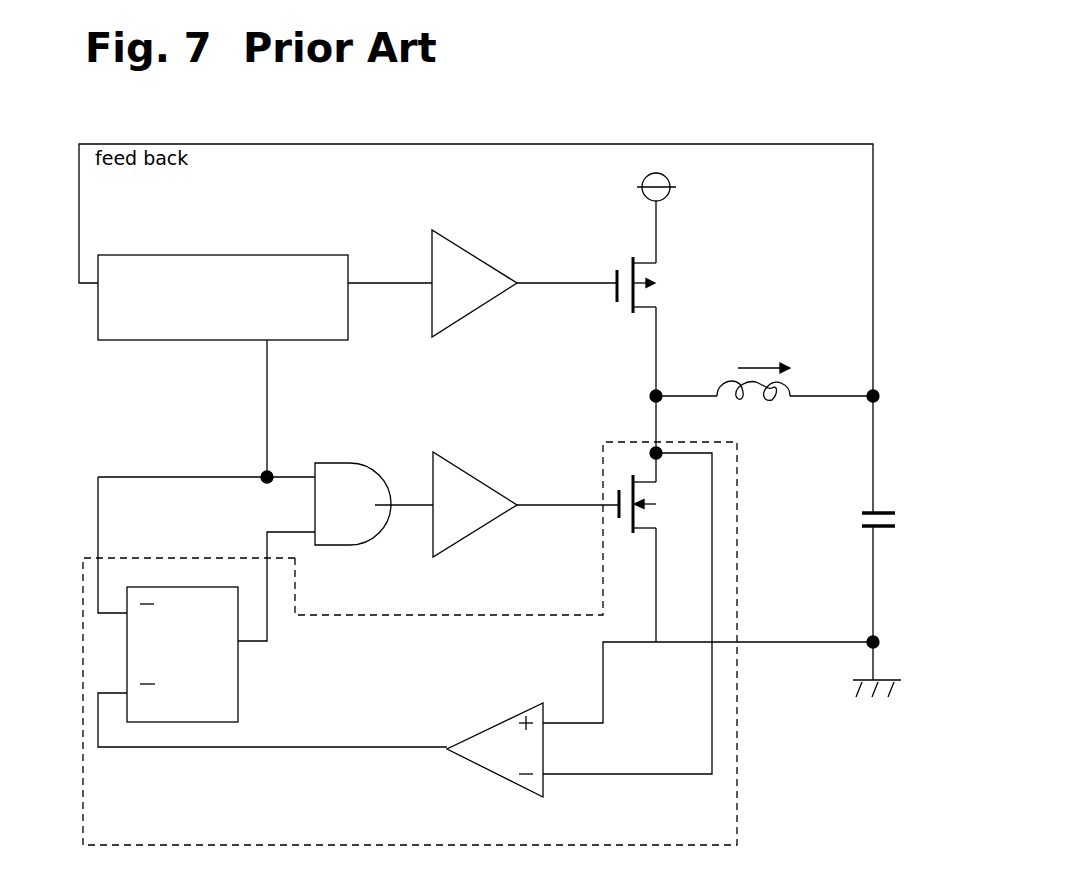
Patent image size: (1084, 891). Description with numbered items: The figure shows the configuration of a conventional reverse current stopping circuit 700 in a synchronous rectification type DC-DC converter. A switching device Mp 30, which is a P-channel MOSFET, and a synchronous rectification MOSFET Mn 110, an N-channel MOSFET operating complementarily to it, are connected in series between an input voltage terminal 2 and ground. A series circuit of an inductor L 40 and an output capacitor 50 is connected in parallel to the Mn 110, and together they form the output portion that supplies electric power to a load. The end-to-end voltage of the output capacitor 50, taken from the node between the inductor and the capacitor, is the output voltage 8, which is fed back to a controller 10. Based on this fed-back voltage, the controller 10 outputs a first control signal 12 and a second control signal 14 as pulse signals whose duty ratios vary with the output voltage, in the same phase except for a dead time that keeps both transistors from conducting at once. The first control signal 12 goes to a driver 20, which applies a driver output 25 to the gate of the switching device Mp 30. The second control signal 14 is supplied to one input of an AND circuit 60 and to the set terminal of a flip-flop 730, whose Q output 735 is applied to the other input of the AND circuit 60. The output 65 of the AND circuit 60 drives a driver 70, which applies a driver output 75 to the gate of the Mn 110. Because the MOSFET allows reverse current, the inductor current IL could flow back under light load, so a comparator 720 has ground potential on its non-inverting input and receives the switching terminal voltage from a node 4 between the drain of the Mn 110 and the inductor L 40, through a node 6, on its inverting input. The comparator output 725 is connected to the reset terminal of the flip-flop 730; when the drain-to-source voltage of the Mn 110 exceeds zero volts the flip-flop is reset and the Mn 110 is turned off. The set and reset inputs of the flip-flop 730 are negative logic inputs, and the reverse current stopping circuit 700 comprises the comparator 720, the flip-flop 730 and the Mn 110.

The input voltage terminal Vin 2 is at (669, 180).
The node 4 is at (662, 392).
The node 6 is at (650, 450).
The output voltage Vout 8 is at (870, 392).
The controller 10 is at (200, 255).
The first control signal 12 is at (383, 286).
The second control signal 14 is at (266, 402).
The driver 20 is at (466, 250).
The driver output Vgp 25 is at (572, 286).
The switching device Mp 30 is at (660, 296).
The inductor L 40 is at (772, 404).
The output capacitor Cout 50 is at (890, 522).
The AND circuit 60 is at (332, 462).
The output of the AND circuit 65 is at (396, 502).
The driver 70 is at (464, 470).
The driver output Vgn 75 is at (563, 508).
The synchronous rectification MOSFET Mn 110 is at (640, 494).
The reverse current stopping circuit 700 is at (739, 800).
The comparator 720 is at (488, 728).
The output terminal of the comparator 725 is at (305, 747).
The flip-flop 730 is at (239, 694).
The Q output 735 is at (296, 600).